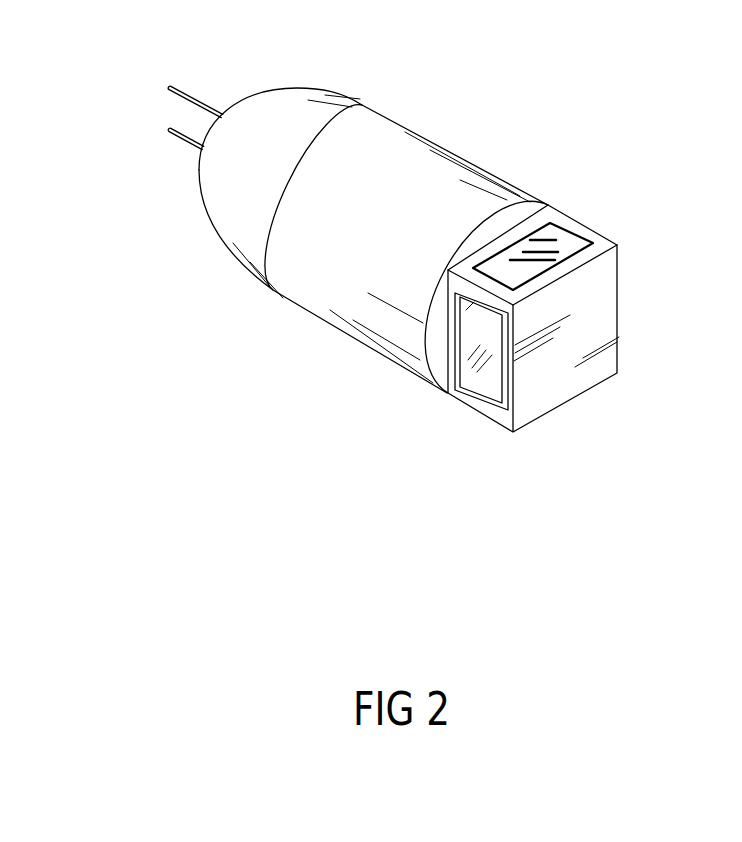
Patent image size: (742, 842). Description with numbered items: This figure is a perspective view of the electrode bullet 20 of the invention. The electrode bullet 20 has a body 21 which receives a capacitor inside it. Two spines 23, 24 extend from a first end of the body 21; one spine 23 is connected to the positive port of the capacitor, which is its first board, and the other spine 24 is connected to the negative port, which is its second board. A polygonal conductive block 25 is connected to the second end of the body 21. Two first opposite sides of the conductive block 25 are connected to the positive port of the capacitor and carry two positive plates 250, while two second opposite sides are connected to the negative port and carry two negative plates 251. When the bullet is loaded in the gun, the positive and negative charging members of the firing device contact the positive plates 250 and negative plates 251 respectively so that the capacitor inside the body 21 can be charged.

The electrode bullet 20 is at (523, 99).
The body 21 is at (325, 298).
The spine 23 is at (197, 98).
The spine 24 is at (182, 135).
The polygonal conductive block 25 is at (615, 289).
The positive plate 250 is at (552, 253).
The negative plate 251 is at (447, 398).